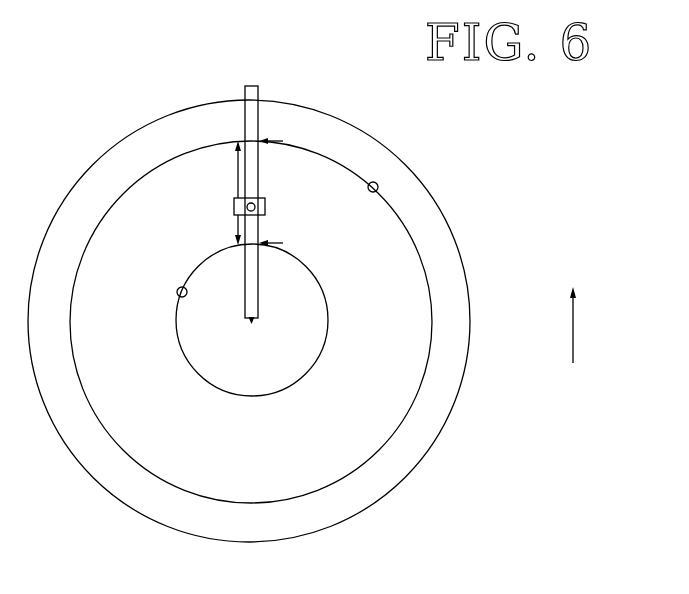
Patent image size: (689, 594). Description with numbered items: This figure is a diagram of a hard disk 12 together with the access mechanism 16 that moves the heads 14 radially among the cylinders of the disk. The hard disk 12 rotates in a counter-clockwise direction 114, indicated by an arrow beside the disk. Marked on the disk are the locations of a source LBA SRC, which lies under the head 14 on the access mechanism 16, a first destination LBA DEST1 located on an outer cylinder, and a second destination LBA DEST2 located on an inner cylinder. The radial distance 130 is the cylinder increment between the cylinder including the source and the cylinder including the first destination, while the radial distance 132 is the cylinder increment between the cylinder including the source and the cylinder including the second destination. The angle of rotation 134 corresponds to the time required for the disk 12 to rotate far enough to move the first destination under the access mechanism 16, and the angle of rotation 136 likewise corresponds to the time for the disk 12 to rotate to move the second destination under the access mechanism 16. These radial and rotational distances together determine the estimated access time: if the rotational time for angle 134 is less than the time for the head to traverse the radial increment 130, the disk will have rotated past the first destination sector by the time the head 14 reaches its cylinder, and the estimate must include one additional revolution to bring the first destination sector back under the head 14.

The hard disk 12 is at (428, 180).
The angle of rotation 134 is at (322, 150).
The angle of rotation 136 is at (328, 315).
The access mechanism 16 is at (258, 93).
The heads 14 is at (234, 207).
The distance 130 is at (238, 170).
The distance 132 is at (238, 222).
The counter-clockwise direction 114 is at (574, 340).
The source LBA SRC is at (265, 207).
The first destination LBA DEST1 is at (376, 183).
The second destination LBA DEST2 is at (177, 295).